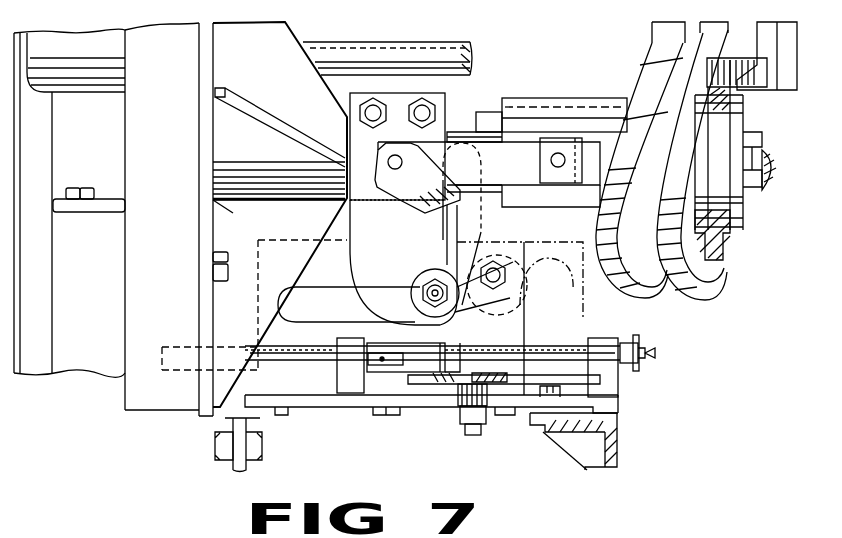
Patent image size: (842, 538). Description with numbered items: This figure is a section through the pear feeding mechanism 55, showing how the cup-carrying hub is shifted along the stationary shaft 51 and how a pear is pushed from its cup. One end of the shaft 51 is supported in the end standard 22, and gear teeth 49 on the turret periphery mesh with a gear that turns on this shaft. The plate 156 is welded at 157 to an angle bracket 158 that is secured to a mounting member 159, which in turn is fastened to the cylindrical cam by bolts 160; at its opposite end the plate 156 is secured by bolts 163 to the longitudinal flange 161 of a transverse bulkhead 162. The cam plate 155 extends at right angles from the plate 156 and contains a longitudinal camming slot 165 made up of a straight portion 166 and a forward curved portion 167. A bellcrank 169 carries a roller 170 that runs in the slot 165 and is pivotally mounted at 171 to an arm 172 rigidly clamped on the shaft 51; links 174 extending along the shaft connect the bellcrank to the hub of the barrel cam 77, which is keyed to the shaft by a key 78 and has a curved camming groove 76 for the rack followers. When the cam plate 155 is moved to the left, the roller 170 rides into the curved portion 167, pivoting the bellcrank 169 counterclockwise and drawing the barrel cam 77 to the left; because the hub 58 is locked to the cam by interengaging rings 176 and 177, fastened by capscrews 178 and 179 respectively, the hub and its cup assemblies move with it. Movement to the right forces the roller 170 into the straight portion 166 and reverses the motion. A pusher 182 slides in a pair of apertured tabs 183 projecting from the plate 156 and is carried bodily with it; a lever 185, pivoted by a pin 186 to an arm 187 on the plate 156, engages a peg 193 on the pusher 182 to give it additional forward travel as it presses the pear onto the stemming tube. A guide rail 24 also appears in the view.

The end standard 22 is at (82, 365).
The guide rail 24 is at (412, 28).
The gear teeth 49 is at (643, 528).
The shaft 51 is at (770, 168).
The pear feeding mechanism 55 is at (568, 448).
The hub 58 is at (778, 26).
The camming groove 76 is at (683, 55).
The barrel cam 77 is at (726, 293).
The key 78 is at (486, 113).
The cam plate 155 is at (514, 328).
The plate 156 is at (332, 407).
The weld 157 is at (247, 402).
The angle bracket 158 is at (245, 428).
The mounting member 159 is at (230, 462).
The bolts 160 is at (215, 442).
The longitudinal flange 161 is at (560, 418).
The transverse bulkhead 162 is at (618, 450).
The bolts 163 is at (556, 392).
The camming slot 165 is at (362, 287).
The straight portion 166 is at (327, 324).
The forward curved portion 167 is at (512, 272).
The bellcrank 169 is at (450, 215).
The roller 170 is at (478, 318).
The pivot 171 is at (428, 293).
The arm 172 is at (352, 108).
The links 174 is at (523, 172).
The ring 176 is at (735, 104).
The ring 177 is at (705, 230).
The capscrews 178 is at (747, 130).
The capscrews 179 is at (757, 80).
The pusher 182 is at (647, 355).
The apertured tabs 183 is at (342, 372).
The lever 185 is at (432, 380).
The pin 186 is at (478, 438).
The arm 187 is at (470, 425).
The peg 193 is at (382, 345).